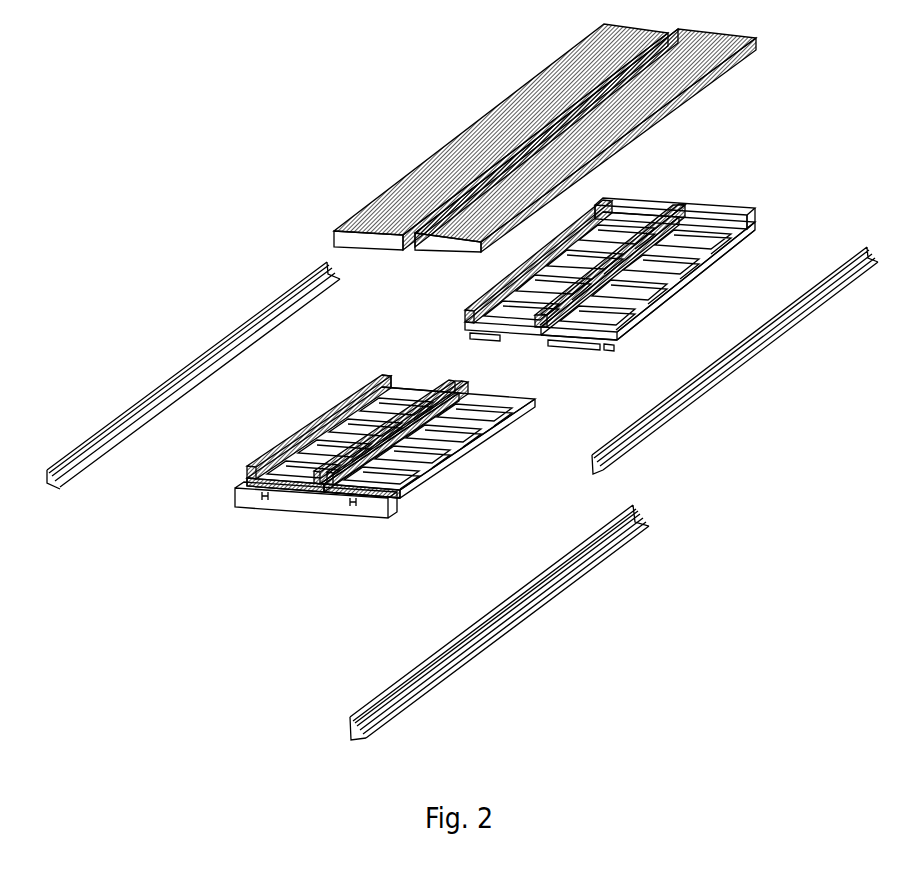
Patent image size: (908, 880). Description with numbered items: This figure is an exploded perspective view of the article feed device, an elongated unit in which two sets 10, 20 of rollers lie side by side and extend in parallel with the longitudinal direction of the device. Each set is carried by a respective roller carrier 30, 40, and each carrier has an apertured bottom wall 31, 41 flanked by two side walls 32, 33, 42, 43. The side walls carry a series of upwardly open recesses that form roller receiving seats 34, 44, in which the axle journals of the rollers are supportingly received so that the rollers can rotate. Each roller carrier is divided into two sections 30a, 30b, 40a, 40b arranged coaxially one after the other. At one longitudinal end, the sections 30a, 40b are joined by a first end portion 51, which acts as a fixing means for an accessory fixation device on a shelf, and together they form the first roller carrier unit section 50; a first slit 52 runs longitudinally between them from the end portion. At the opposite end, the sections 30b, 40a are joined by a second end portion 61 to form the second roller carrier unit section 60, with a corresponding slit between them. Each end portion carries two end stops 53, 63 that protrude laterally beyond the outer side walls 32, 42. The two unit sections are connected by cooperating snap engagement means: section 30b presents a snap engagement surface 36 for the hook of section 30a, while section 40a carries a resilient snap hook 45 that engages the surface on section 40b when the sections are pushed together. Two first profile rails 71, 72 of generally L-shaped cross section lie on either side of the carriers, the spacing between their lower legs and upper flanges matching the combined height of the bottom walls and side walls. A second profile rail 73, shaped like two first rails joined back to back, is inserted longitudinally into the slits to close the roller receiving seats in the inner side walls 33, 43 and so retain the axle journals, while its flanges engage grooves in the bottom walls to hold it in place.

The set of rollers 10 is at (496, 106).
The set of rollers 20 is at (720, 80).
The roller carrier 30 is at (442, 352).
The roller carrier section 30a is at (319, 440).
The roller carrier section 30b is at (507, 286).
The bottom wall 31 is at (534, 266).
The side wall 32 is at (572, 238).
The side wall 33 is at (663, 208).
The roller receiving seat 34 is at (365, 380).
The snap engagement surface 36 is at (538, 334).
The roller carrier 40 is at (559, 366).
The roller carrier section 40a is at (688, 297).
The roller carrier section 40b is at (402, 490).
The bottom wall 41 is at (700, 266).
The side wall 42 is at (738, 250).
The side wall 43 is at (672, 212).
The roller receiving seat 44 is at (640, 322).
The snap hook 45 is at (600, 350).
The roller carrier unit section 50 is at (327, 463).
The first end portion 51 is at (306, 524).
The first slit 52 is at (457, 374).
The end stop 53 is at (255, 482).
The roller carrier unit section 60 is at (544, 316).
The second end portion 61 is at (742, 205).
The end stop 63 is at (604, 204).
The first profile rail 71 is at (157, 392).
The first profile rail 72 is at (746, 372).
The second profile rail 73 is at (522, 632).